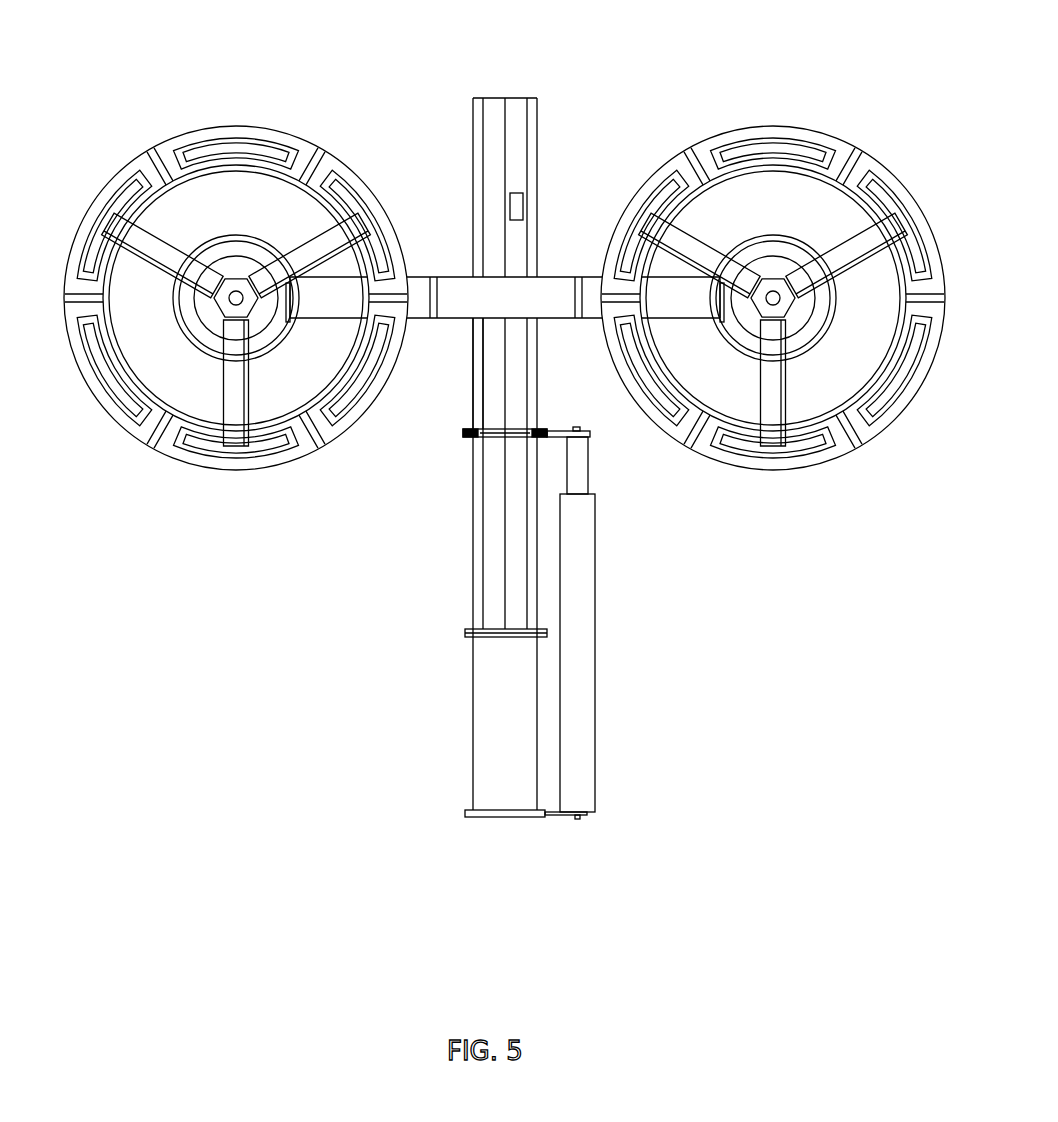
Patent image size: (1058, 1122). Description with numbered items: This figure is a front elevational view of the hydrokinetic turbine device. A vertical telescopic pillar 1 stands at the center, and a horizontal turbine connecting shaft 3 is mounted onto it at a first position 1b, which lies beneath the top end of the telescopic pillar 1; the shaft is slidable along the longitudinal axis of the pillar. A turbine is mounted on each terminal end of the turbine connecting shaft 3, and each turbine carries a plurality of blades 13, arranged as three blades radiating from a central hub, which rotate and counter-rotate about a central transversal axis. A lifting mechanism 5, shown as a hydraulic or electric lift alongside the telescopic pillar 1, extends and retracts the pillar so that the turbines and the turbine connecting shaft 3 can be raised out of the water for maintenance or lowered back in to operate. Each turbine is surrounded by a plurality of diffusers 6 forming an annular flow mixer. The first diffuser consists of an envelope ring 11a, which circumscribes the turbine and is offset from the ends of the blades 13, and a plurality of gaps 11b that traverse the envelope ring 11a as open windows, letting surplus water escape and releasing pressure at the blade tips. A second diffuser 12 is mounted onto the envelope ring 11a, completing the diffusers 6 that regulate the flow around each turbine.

The telescopic pillar 1 is at (497, 497).
The first position 1b is at (476, 323).
The turbine connecting shaft 3 is at (442, 297).
The lifting mechanism 5 is at (578, 728).
The plurality of diffusers 6 is at (228, 489).
The envelope ring 11a is at (244, 128).
The plurality of gaps 11b is at (98, 369).
The second diffuser 12 is at (316, 162).
The plurality of blades 13 is at (235, 405).